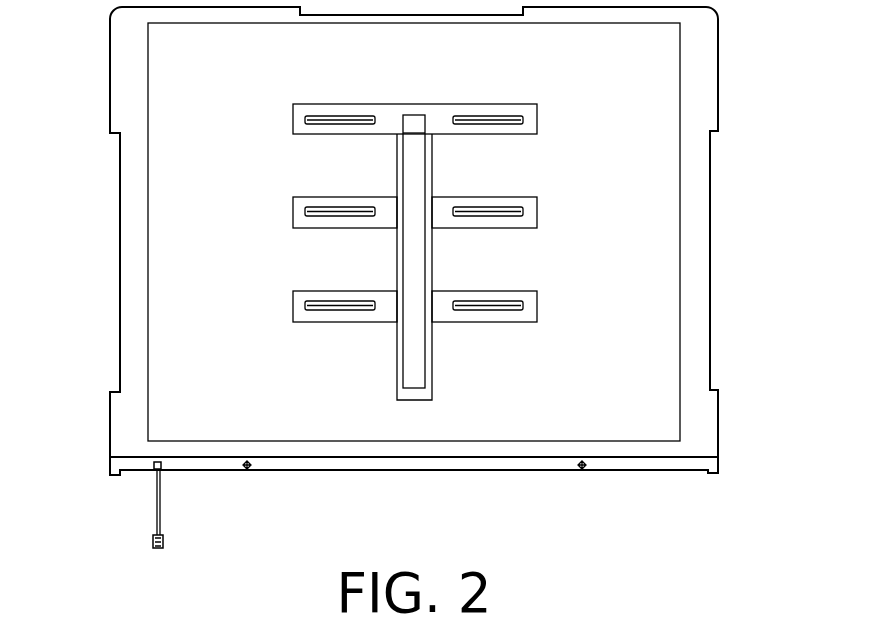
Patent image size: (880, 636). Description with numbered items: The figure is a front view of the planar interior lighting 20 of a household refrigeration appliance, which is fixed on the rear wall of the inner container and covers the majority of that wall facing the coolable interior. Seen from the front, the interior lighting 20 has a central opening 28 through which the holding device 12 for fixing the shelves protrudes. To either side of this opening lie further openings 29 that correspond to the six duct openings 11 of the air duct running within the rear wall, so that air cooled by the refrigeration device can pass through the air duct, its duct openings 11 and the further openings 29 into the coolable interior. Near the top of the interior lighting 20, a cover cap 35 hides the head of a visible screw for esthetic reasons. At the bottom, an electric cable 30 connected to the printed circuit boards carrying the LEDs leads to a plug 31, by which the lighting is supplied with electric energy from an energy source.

The interior lighting 20 is at (84, 90).
The duct openings 11 is at (323, 208).
The holding device 12 is at (412, 357).
The opening 28 is at (430, 368).
The further opening 29 is at (300, 108).
The electric cable 30 is at (157, 505).
The plug 31 is at (163, 536).
The cover cap 35 is at (417, 125).